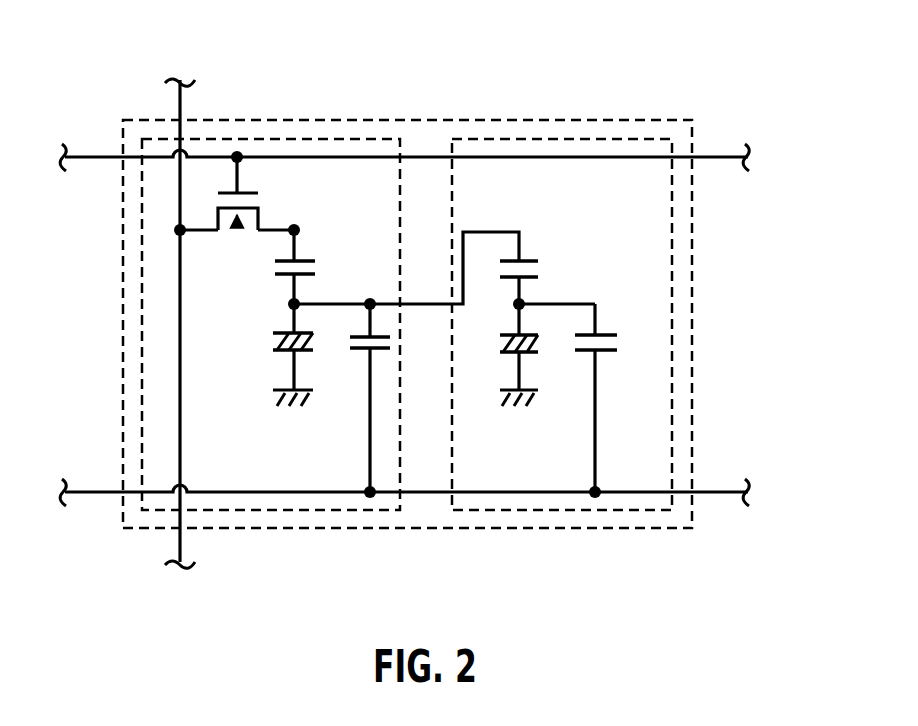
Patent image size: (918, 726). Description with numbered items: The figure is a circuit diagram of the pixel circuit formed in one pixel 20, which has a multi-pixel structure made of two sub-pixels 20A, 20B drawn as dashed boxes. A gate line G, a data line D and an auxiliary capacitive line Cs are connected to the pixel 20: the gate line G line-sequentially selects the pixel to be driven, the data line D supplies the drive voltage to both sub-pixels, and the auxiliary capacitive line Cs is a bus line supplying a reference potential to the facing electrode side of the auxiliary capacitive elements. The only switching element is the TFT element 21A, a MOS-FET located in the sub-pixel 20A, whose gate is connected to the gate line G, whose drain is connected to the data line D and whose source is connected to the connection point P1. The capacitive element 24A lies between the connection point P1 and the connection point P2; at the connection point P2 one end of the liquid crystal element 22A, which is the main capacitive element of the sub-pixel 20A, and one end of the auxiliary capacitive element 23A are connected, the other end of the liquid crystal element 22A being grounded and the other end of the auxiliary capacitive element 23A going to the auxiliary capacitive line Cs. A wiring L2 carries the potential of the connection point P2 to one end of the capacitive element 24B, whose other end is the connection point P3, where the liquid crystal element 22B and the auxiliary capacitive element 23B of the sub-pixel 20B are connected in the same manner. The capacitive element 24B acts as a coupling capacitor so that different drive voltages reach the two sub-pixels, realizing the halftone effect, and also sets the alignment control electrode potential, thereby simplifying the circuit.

The data line D is at (180, 104).
The gate line G is at (722, 157).
The auxiliary capacitive line Cs is at (722, 492).
The pixel 20 is at (423, 118).
The sub-pixel 20A is at (142, 256).
The sub-pixel 20B is at (672, 256).
The TFT element 21A is at (195, 207).
The liquid crystal element 22A is at (262, 327).
The liquid crystal element 22B is at (540, 363).
The auxiliary capacitive element 23A is at (357, 362).
The auxiliary capacitive element 23B is at (621, 327).
The capacitive element 24A is at (309, 248).
The capacitive element 24B is at (531, 254).
The connection point P1 is at (290, 234).
The connection point P2 is at (290, 300).
The connection point P3 is at (525, 301).
The wiring L2 is at (422, 303).